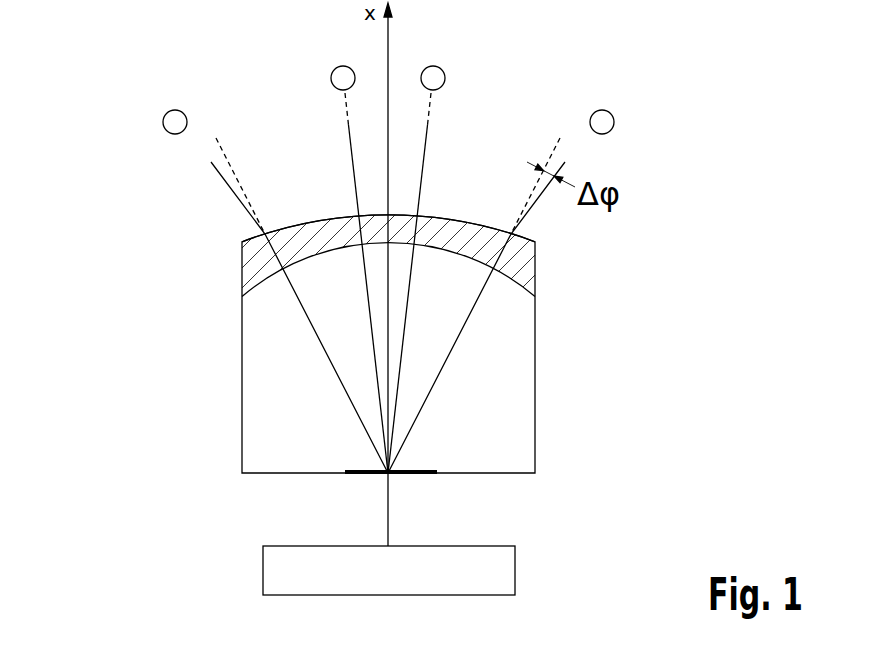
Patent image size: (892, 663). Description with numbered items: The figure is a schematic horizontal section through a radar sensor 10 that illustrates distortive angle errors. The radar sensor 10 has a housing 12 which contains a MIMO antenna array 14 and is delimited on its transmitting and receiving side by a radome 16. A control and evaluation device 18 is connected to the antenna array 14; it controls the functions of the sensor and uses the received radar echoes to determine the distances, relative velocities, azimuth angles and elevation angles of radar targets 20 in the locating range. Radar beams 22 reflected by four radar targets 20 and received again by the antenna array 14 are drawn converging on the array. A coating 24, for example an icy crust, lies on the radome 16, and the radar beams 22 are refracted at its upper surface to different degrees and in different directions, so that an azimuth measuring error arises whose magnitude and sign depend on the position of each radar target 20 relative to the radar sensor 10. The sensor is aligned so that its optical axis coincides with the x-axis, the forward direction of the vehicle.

The radar sensor 10 is at (200, 352).
The housing 12 is at (535, 388).
The MIMO antenna array 14 is at (425, 472).
The radome 16 is at (313, 225).
The control and evaluation device 18 is at (516, 570).
The radar target 20 is at (163, 124).
The radar beam 22 is at (230, 190).
The coating 24 is at (535, 271).